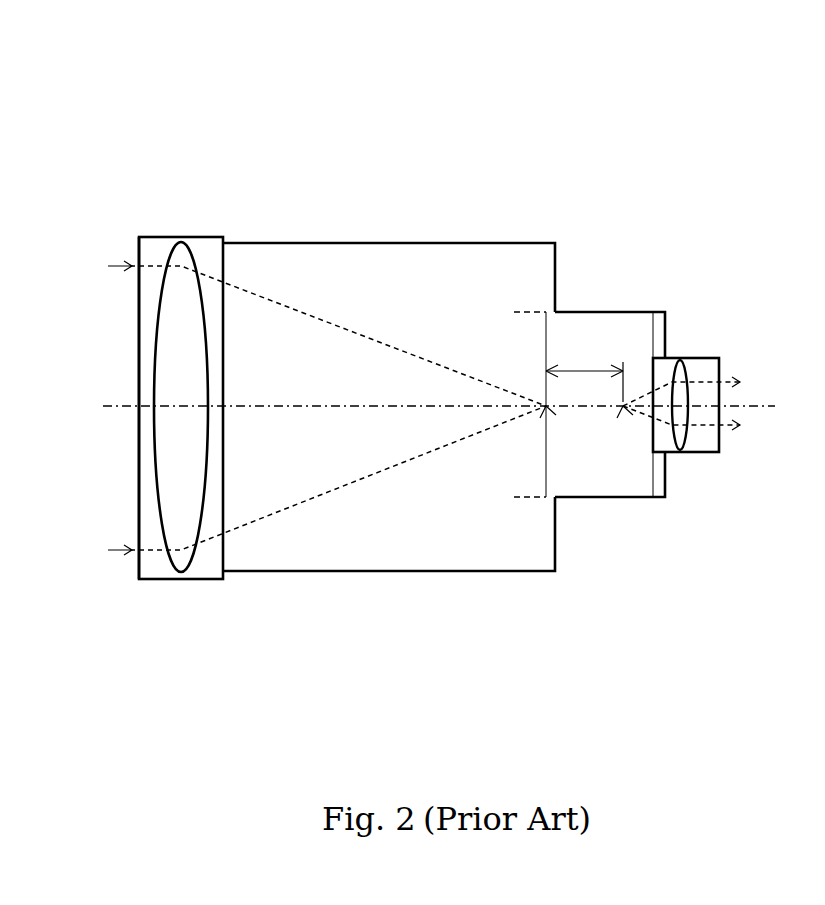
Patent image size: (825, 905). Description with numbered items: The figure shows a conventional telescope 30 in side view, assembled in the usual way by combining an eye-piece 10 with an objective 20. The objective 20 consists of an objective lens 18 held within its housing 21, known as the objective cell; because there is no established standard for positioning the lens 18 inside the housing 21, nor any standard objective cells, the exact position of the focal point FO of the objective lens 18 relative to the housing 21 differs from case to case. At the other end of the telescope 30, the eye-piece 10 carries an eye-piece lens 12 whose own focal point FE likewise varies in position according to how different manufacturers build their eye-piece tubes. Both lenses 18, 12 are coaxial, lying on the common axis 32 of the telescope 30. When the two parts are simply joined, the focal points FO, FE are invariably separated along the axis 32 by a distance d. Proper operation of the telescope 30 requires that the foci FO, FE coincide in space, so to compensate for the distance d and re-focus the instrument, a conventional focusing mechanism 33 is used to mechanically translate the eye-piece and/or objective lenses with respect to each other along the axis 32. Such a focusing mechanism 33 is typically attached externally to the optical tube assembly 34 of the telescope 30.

The eye-piece 10 is at (754, 346).
The eye-piece lens 12 is at (682, 452).
The objective lens 18 is at (171, 521).
The objective 20 is at (206, 582).
The housing 21 is at (139, 258).
The telescope 30 is at (514, 141).
The axis 32 is at (113, 405).
The focusing mechanism 33 is at (643, 500).
The optical tube assembly 34 is at (513, 573).
The distance d is at (568, 369).
The focal point of the objective lens FO is at (546, 410).
The focal point of the eye-piece lens FE is at (623, 410).